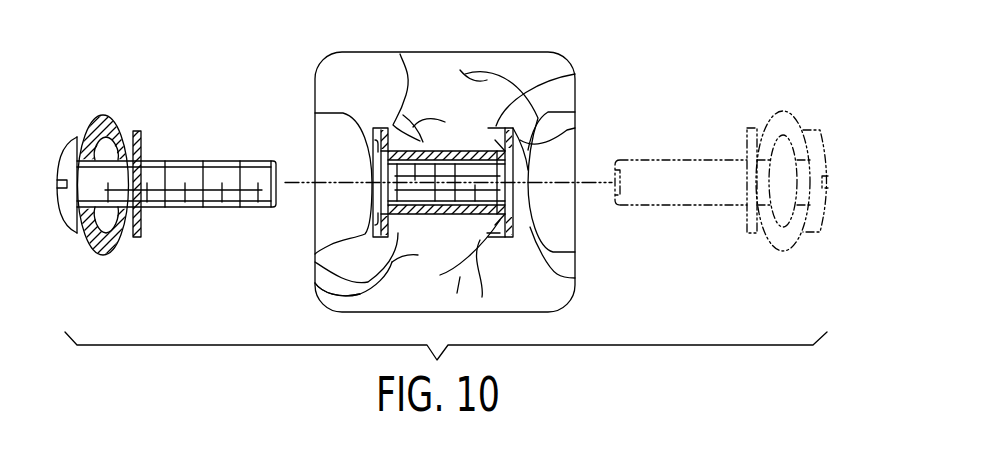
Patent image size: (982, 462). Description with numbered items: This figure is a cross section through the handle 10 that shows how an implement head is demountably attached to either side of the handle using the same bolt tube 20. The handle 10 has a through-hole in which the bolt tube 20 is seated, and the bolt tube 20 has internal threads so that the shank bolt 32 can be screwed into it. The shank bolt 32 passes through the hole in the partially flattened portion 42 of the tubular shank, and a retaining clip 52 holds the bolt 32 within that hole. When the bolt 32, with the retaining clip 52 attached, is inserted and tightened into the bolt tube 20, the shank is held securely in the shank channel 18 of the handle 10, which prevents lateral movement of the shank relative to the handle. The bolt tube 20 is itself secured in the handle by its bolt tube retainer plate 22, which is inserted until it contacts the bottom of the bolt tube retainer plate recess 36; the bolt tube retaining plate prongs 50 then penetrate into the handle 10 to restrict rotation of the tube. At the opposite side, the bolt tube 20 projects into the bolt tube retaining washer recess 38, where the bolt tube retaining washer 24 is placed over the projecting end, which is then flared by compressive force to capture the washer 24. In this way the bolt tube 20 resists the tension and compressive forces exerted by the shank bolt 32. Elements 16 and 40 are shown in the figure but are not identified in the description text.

The handle 10 is at (473, 107).
The bore 16 is at (560, 232).
The shank channel 18 is at (335, 207).
The bolt tube 20 is at (457, 138).
The bolt tube retainer plate 22 is at (575, 278).
The bolt tube retaining washer 24 is at (347, 297).
The shank bolt 32 is at (192, 186).
The bolt tube retainer plate recess 36 is at (575, 128).
The bolt tube retaining washer recess 38 is at (367, 137).
The bushing 40 is at (337, 251).
The partially flattened portion 42 is at (102, 113).
The bolt tube retaining plate prongs 50 is at (575, 76).
The retaining clip 52 is at (141, 142).